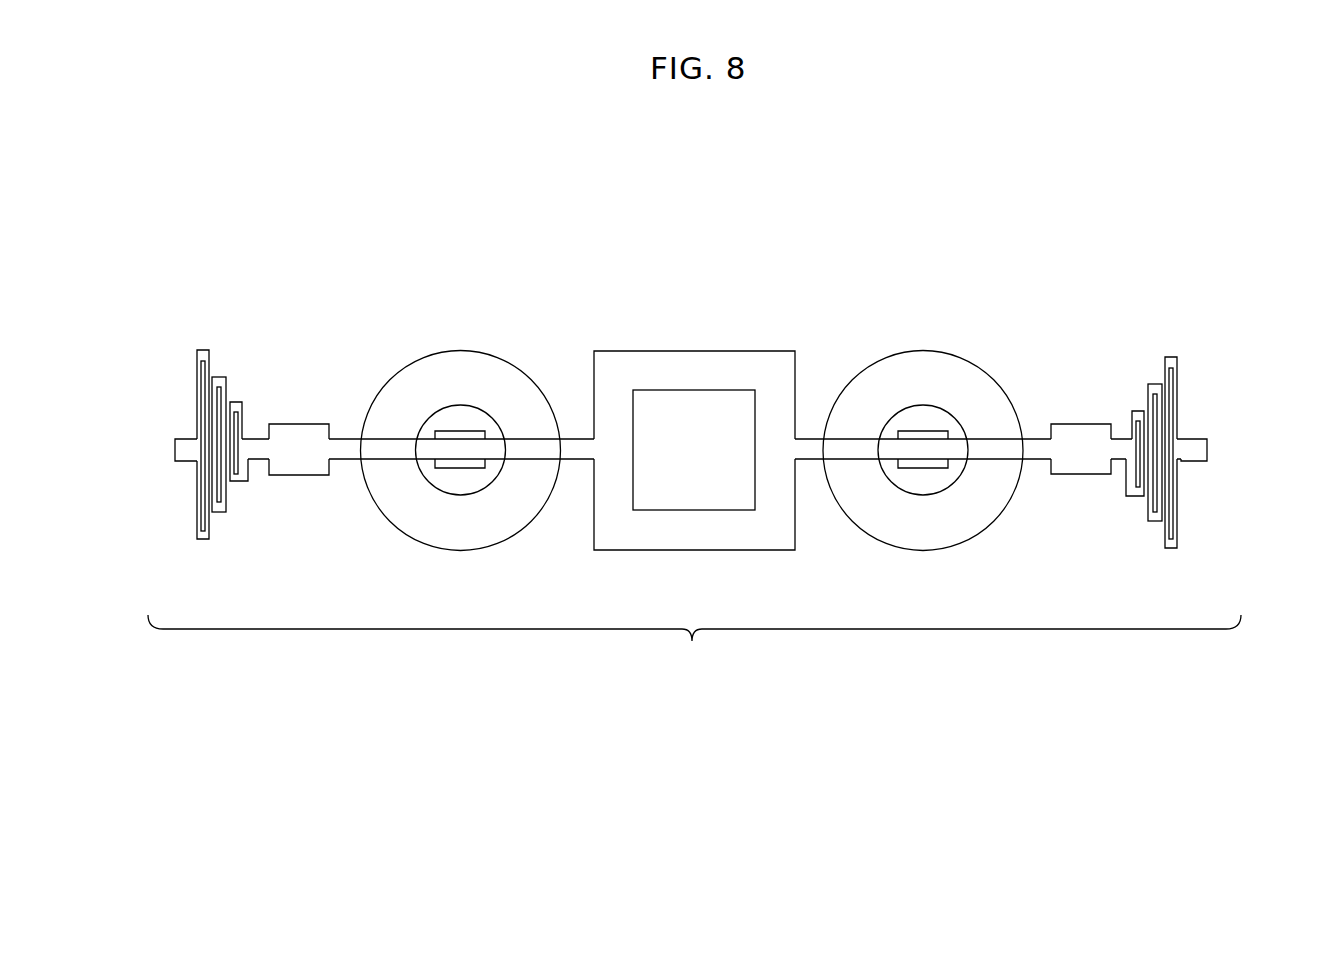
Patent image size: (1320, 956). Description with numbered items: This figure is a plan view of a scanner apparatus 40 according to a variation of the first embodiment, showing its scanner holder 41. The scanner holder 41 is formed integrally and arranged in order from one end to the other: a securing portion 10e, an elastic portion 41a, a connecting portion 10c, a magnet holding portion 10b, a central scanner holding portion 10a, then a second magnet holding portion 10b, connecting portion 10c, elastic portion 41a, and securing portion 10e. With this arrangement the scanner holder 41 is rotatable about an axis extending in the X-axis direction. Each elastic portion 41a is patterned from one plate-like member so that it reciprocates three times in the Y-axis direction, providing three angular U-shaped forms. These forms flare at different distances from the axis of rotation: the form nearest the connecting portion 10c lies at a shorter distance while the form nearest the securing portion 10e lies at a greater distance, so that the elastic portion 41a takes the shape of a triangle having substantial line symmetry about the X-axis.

The scanner holding portion 10a is at (654, 537).
The magnet holding portion 10b is at (526, 453).
The connecting portion 10c is at (298, 458).
The securing portion 10e is at (183, 453).
The scanner holder 41 is at (694, 642).
The elastic portion 41a is at (212, 540).
The scanner apparatus 40 is at (1223, 342).